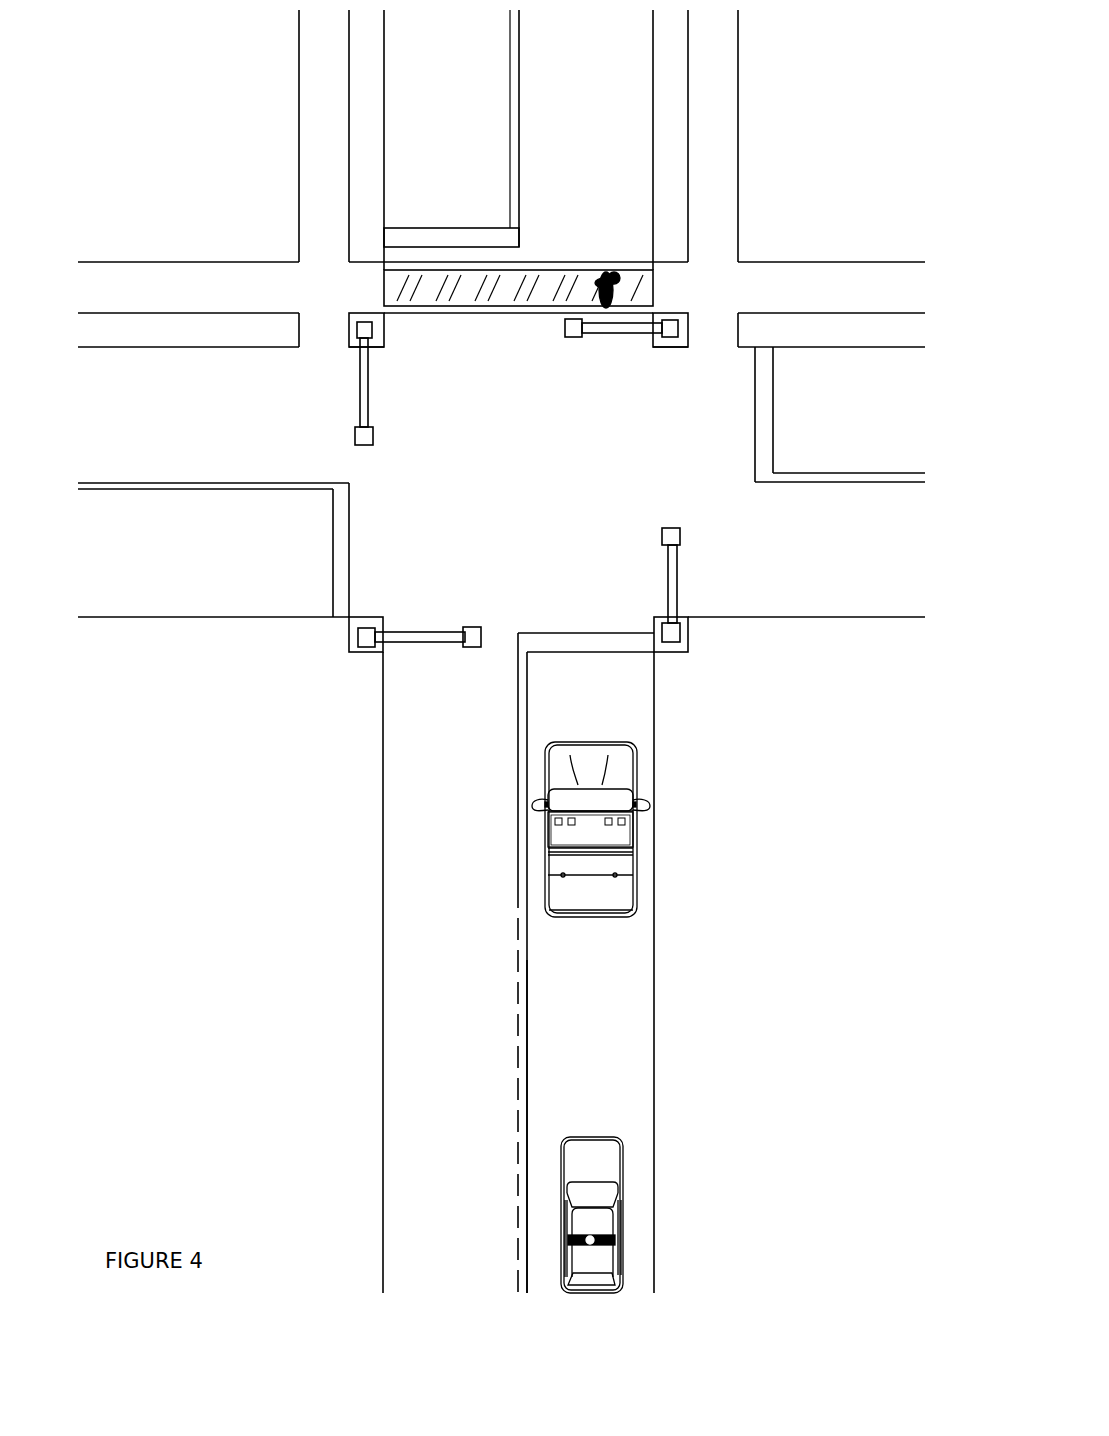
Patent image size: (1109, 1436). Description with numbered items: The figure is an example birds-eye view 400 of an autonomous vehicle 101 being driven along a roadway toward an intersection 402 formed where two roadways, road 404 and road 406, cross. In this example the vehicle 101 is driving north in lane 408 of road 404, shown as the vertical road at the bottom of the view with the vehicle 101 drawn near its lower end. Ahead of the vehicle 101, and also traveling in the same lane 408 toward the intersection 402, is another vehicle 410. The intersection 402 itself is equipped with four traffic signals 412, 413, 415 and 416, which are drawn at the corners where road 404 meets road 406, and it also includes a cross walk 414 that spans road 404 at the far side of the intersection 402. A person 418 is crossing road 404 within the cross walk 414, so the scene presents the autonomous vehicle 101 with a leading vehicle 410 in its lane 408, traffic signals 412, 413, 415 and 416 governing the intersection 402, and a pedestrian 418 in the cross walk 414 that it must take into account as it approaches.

The birds-eye view 400 is at (501, 651).
The intersection 402 is at (518, 395).
The roadway 404 is at (501, 651).
The roadway 406 is at (501, 465).
The lane 408 is at (567, 1126).
The vehicle 410 is at (638, 840).
The traffic signal 412 is at (565, 327).
The traffic signal 413 is at (355, 440).
The cross walk 414 is at (380, 304).
The traffic signal 415 is at (682, 545).
The traffic signal 416 is at (457, 643).
The person 418 is at (622, 280).
The vehicle 101 is at (623, 1225).